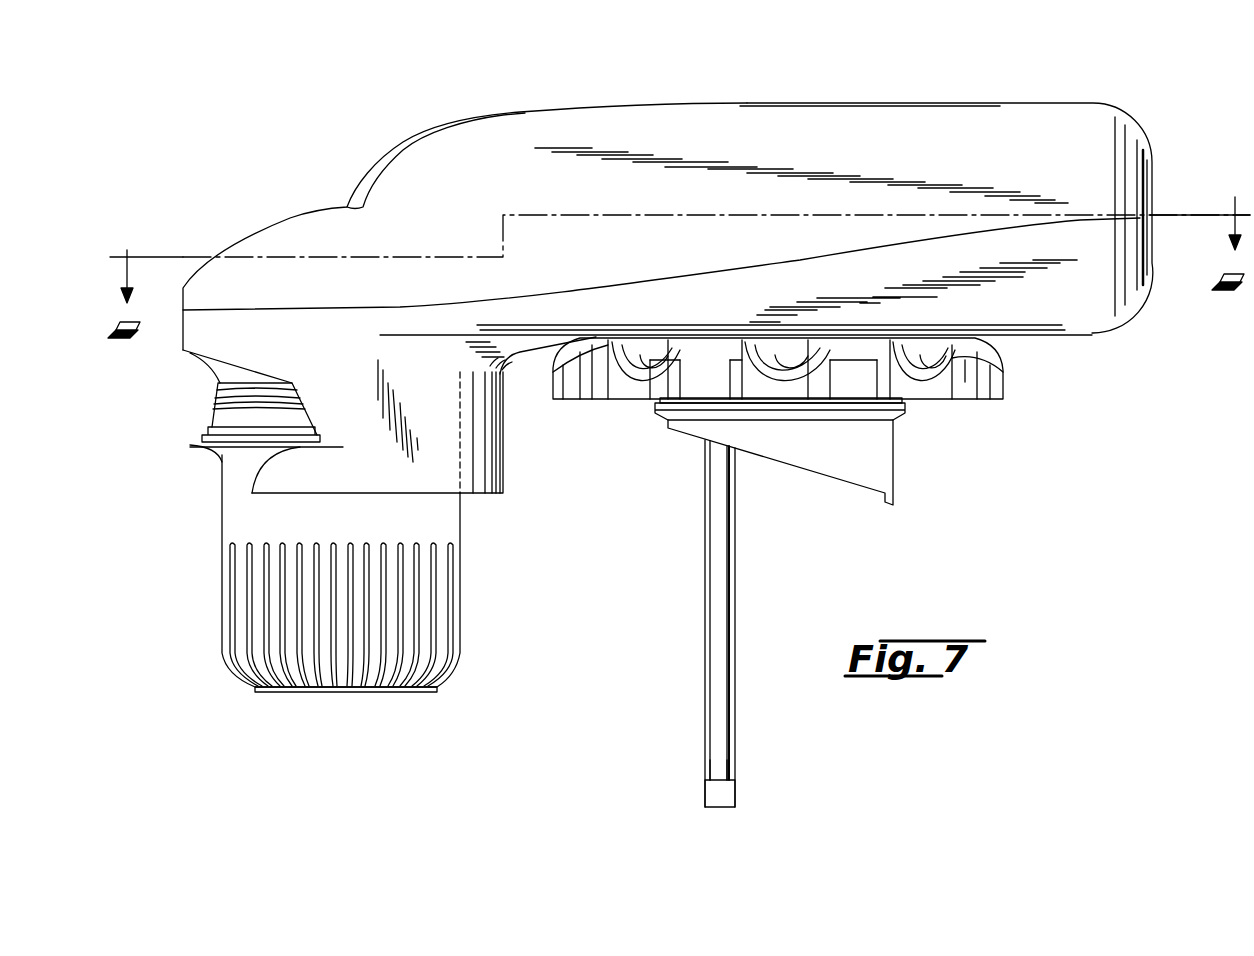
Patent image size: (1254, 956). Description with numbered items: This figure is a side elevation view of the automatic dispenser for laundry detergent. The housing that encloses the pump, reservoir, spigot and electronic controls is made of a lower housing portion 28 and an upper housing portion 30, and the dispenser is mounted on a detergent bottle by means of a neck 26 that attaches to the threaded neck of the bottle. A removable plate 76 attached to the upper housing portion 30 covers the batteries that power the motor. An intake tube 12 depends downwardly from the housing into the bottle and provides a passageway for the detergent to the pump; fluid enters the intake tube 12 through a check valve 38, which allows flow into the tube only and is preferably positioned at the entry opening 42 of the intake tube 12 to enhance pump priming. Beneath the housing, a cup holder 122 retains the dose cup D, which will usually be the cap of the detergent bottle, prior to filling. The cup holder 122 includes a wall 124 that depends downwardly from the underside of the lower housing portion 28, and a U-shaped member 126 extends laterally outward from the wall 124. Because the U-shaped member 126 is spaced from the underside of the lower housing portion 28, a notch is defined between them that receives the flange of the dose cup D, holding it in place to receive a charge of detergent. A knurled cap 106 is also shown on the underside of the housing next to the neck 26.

The upper housing portion 30 is at (1018, 103).
The removable plate 76 is at (768, 102).
The lower housing portion 28 is at (1058, 336).
The knurled cap 106 is at (993, 388).
The neck 26 is at (887, 508).
The intake tube 12 is at (737, 592).
The entry opening 42 is at (703, 752).
The check valve 38 is at (737, 792).
The wall 124 is at (505, 432).
The cup holder 122 is at (527, 478).
The U-shaped member 126 is at (268, 480).
The dose cup D is at (460, 608).